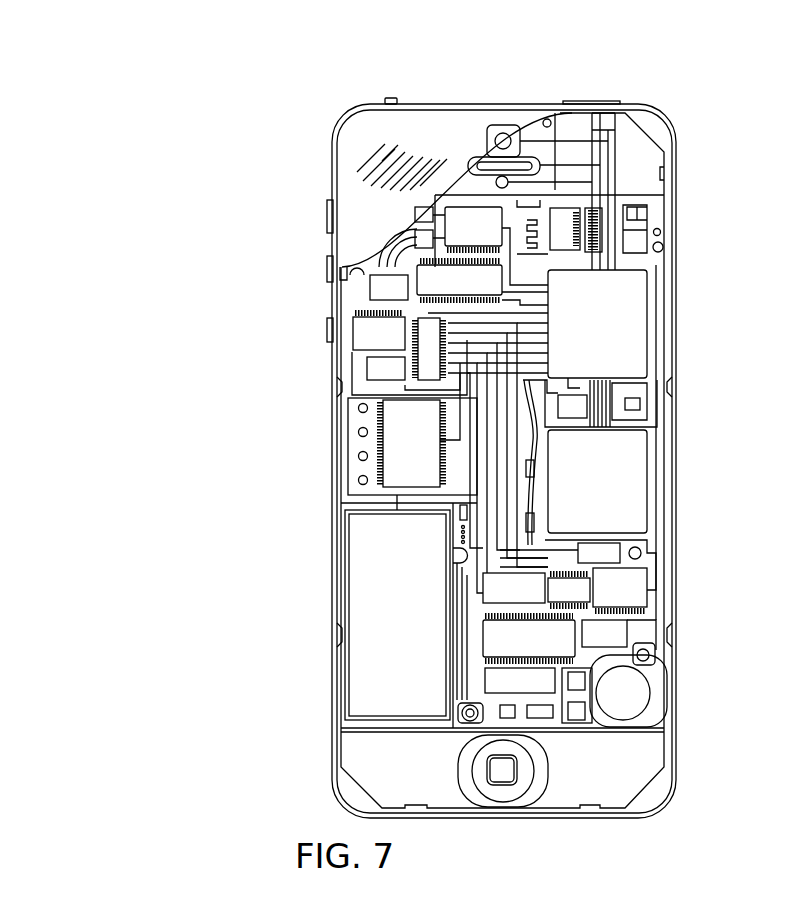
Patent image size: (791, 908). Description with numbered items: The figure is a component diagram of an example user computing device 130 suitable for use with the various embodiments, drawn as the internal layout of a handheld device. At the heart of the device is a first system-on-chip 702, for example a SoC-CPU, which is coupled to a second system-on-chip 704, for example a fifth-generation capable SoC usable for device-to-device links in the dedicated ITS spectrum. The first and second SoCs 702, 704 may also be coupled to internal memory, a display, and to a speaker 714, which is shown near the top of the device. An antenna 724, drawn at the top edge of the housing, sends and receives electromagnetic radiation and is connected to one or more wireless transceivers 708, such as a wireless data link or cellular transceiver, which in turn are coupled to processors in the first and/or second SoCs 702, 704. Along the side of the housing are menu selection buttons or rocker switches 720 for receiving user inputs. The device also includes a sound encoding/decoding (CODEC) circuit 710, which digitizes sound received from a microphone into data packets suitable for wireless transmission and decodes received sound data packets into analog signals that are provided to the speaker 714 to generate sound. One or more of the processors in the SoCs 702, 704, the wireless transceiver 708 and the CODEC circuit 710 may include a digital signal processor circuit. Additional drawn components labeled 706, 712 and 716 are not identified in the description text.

The user computing device 130 is at (124, 82).
The first system-on-chip 702 is at (577, 334).
The second system-on-chip 704 is at (577, 494).
The integrated circuit 706 is at (438, 293).
The wireless transceiver 708 is at (618, 215).
The sound encoding/decoding (CODEC) circuit 710 is at (453, 238).
The display glass 712 is at (347, 173).
The speaker 714 is at (480, 158).
The integrated circuit 716 is at (508, 650).
The menu selection buttons or rocker switches 720 is at (327, 268).
The antenna 724 is at (386, 99).